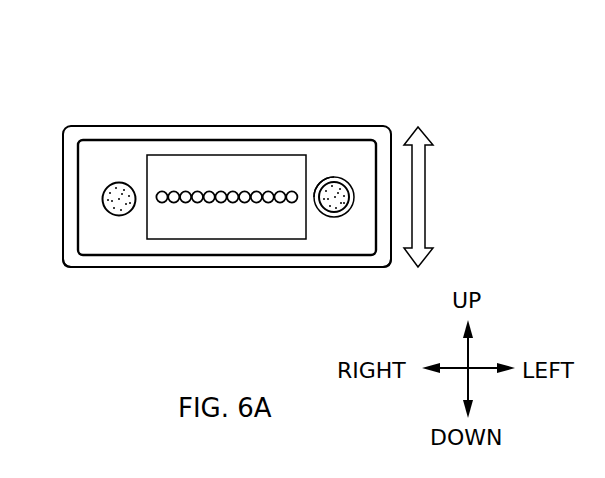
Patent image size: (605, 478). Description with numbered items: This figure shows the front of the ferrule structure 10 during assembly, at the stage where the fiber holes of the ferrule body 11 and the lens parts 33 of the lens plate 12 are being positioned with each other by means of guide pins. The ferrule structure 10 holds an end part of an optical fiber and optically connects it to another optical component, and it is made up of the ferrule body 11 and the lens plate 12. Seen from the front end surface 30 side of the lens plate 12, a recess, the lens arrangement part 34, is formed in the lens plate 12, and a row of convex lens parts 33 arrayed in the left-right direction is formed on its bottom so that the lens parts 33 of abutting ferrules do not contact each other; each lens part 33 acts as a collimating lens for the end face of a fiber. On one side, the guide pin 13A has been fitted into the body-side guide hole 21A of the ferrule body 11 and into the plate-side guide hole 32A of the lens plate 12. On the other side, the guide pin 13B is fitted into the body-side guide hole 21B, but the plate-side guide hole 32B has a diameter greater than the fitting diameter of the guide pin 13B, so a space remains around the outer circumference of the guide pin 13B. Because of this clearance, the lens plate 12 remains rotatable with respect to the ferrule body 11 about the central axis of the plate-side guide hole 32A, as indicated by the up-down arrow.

The ferrule structure 10 is at (227, 189).
The ferrule body 11 is at (122, 267).
The lens plate 12 is at (212, 126).
The guide pin 13A is at (112, 126).
The guide pin 13B is at (335, 187).
The body-side guide hole 21A is at (108, 185).
The body-side guide hole 21B is at (320, 182).
The front end surface 30 is at (335, 242).
The plate-side guide hole 32A is at (122, 193).
The plate-side guide hole 32B is at (343, 182).
The lens part 33 is at (210, 200).
The lens arrangement part 34 is at (261, 227).